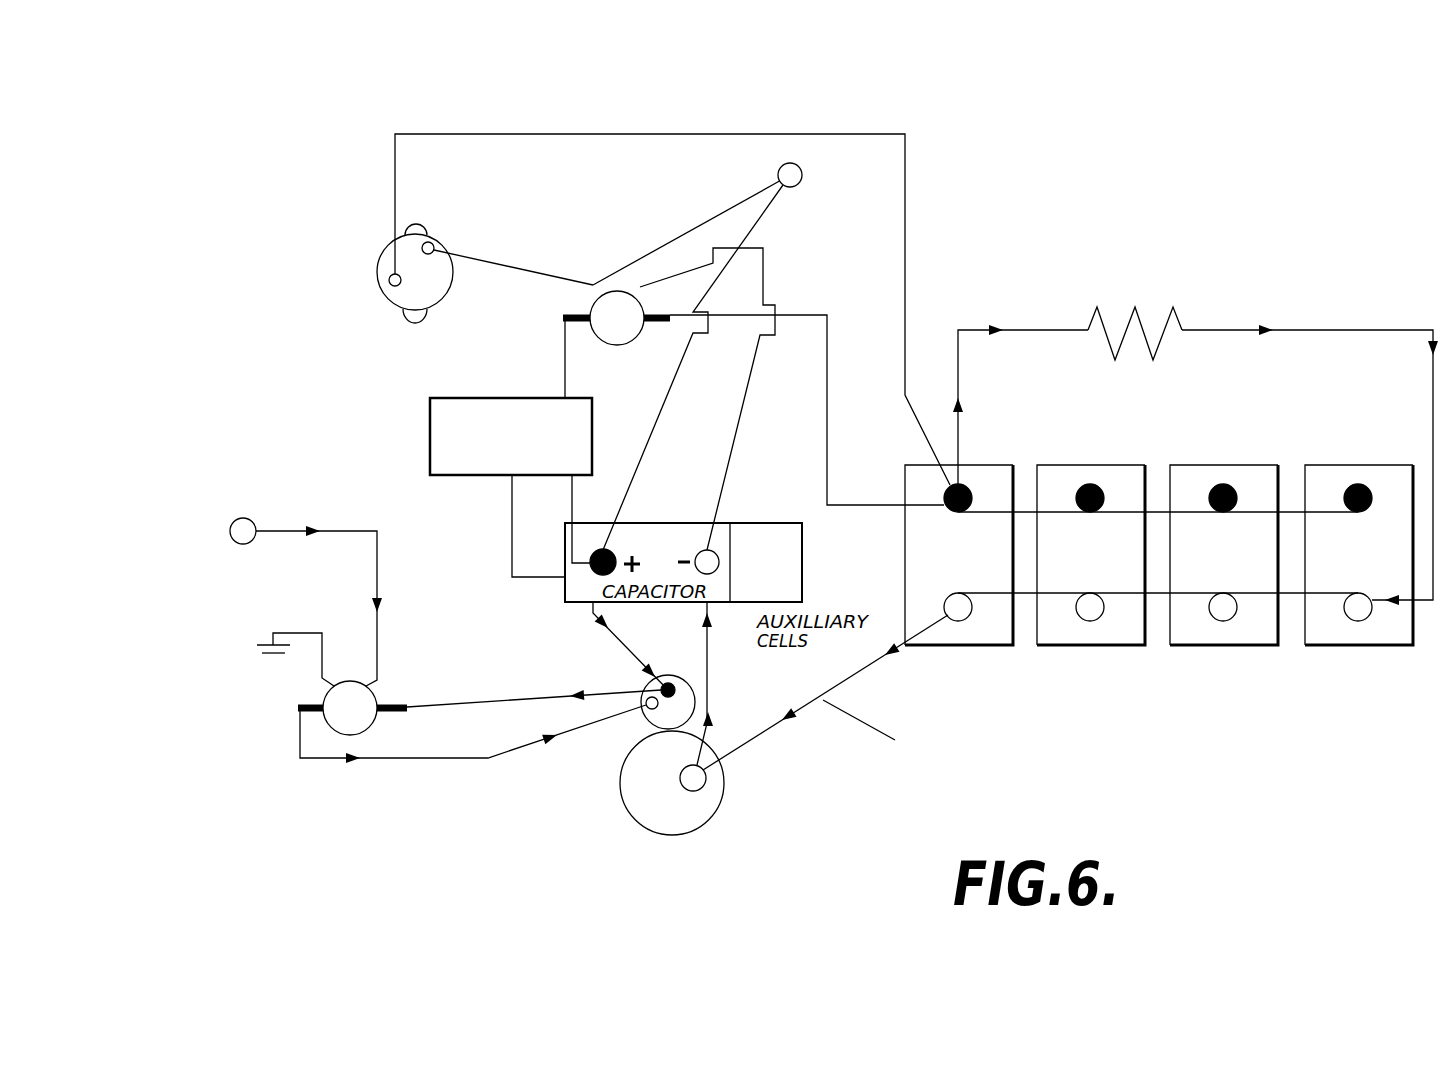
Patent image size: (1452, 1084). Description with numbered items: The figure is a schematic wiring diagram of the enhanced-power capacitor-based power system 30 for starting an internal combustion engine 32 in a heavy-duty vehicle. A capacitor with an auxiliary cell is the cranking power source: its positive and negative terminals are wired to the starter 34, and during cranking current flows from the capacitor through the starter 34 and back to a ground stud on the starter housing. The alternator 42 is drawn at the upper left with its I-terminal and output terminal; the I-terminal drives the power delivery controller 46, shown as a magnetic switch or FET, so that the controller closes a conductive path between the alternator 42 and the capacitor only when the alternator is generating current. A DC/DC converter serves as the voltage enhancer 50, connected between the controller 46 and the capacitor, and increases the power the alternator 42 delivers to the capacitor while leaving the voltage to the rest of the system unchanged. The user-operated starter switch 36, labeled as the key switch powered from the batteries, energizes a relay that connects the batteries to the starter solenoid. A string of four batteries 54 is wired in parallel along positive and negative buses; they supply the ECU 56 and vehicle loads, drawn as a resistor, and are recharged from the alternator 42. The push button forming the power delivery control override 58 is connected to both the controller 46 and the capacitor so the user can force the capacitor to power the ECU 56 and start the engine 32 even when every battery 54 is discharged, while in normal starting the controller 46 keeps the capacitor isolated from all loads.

The capacitor-based power system 30 is at (1012, 173).
The internal combustion engine 32 is at (369, 727).
The starter 34 is at (700, 820).
The starter switch 36 is at (233, 541).
The alternator 42 is at (442, 292).
The power delivery controller 46 is at (605, 345).
The voltage enhancer 50 is at (430, 417).
The battery 54 is at (990, 645).
The ECU 56 is at (1333, 243).
The power delivery control override 58 is at (800, 183).